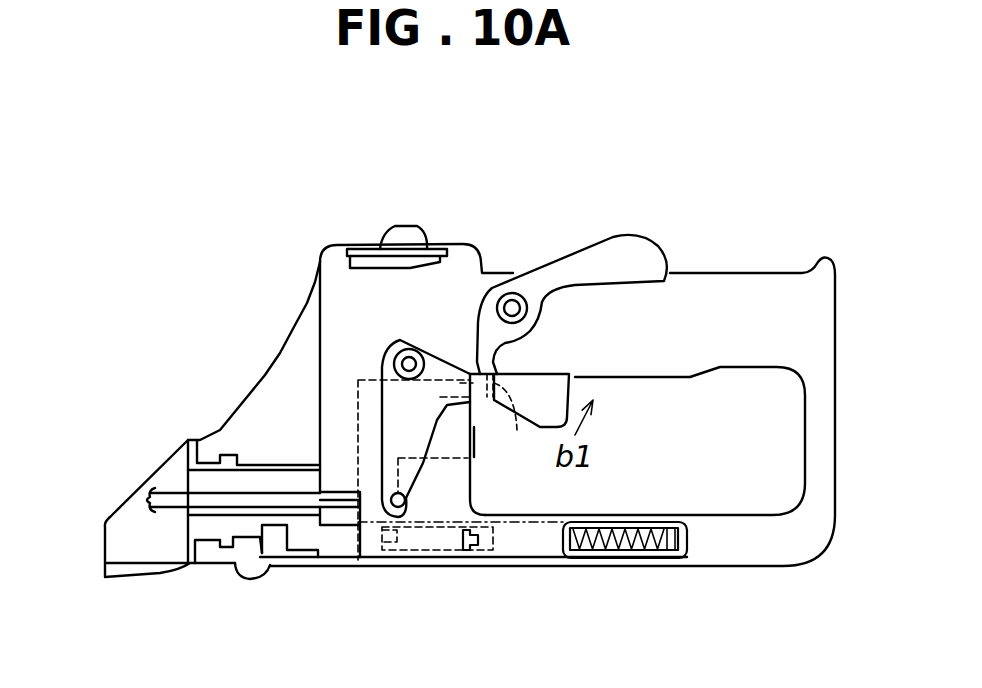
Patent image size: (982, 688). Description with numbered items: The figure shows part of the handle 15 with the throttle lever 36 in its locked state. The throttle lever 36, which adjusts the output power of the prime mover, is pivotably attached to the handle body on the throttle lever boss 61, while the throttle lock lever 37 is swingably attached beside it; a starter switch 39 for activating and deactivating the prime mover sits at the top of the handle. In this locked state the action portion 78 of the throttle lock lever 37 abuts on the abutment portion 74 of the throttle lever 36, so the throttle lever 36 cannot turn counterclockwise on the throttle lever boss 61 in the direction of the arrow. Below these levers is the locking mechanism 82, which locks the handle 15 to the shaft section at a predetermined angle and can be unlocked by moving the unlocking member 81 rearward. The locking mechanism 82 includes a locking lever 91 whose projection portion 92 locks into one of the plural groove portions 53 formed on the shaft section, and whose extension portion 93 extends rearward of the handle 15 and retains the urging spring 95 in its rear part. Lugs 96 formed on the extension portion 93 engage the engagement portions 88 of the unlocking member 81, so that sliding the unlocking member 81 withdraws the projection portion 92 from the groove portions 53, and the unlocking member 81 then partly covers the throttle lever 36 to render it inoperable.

The handle 15 is at (193, 161).
The throttle lever 36 is at (540, 387).
The throttle lock lever 37 is at (622, 258).
The starter switch 39 is at (388, 212).
The groove portions 53 is at (273, 537).
The throttle lever boss 61 is at (409, 364).
The abutment portion 74 is at (517, 410).
The action portion 78 is at (497, 353).
The unlocking member 81 is at (351, 367).
The locking mechanism 82 is at (646, 492).
The engagement portions 88 is at (395, 535).
The locking lever 91 is at (668, 508).
The projection portion 92 is at (307, 547).
The extension portion 93 is at (538, 545).
The urging spring 95 is at (612, 548).
The lugs 96 is at (477, 550).